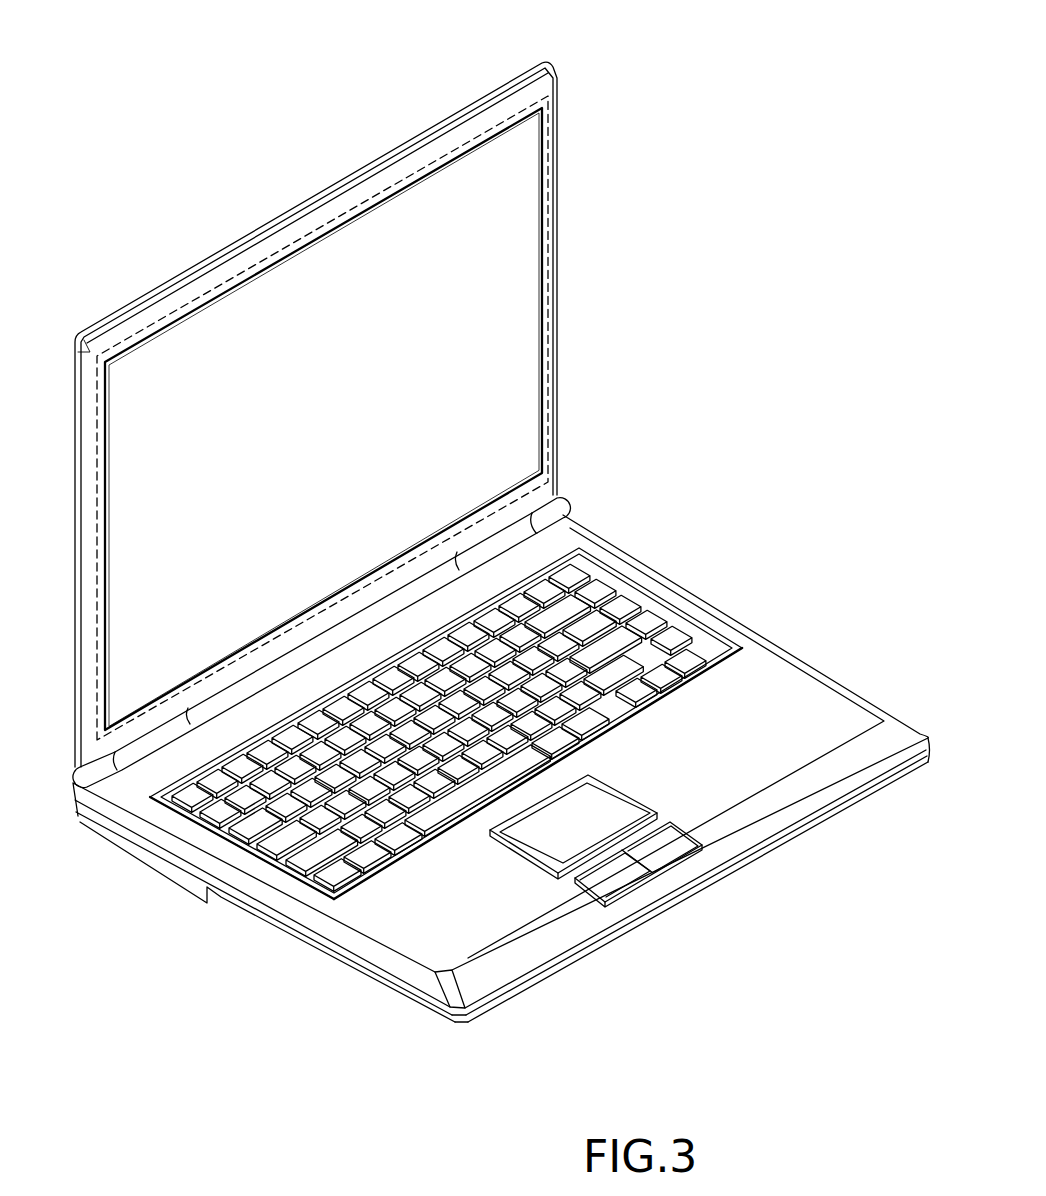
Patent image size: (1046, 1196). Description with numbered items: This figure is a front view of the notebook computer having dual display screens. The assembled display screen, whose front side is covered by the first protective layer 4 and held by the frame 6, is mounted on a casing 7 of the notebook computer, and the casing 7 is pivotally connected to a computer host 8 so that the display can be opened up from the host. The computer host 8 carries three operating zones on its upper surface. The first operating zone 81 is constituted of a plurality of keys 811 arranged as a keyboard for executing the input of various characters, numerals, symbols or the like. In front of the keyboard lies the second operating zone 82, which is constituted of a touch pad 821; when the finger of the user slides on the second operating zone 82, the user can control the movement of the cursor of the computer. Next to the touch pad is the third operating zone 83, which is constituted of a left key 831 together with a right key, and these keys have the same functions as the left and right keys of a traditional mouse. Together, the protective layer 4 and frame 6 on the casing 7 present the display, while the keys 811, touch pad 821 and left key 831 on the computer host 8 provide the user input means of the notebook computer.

The first protective layer 4 is at (528, 347).
The frame 6 is at (453, 113).
The casing 7 is at (316, 196).
The computer host 8 is at (785, 676).
The first operating zone 81 is at (650, 592).
The keys 811 is at (594, 603).
The second operating zone 82 is at (635, 805).
The touch pad 821 is at (558, 840).
The third operating zone 83 is at (708, 837).
The left key 831 is at (667, 853).